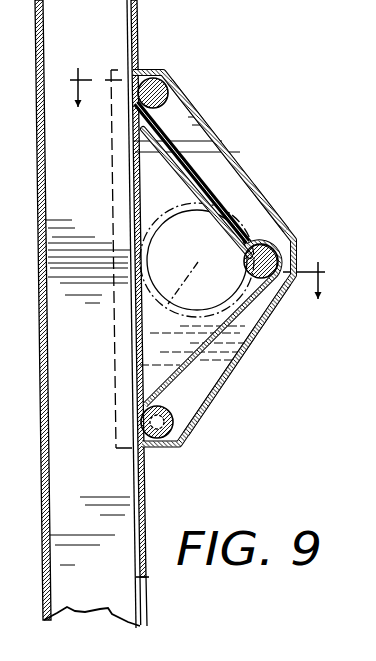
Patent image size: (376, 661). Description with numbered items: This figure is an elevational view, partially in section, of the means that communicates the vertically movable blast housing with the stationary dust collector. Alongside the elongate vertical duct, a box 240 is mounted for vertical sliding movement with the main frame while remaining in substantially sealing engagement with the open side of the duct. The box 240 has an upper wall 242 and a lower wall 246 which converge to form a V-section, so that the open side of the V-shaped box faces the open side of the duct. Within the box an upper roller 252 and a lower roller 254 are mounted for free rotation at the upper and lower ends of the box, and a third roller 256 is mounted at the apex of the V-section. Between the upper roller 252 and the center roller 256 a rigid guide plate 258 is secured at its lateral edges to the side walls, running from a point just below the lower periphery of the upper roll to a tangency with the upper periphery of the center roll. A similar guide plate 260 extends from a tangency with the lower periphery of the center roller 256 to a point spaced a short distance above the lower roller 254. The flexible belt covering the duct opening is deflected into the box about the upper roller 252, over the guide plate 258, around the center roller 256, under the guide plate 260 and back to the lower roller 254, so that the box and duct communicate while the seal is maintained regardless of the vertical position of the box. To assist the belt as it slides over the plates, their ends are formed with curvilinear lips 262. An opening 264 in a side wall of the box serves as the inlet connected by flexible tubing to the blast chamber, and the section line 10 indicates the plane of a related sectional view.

The section line 10- 10 is at (201, 245).
The box 240 is at (209, 117).
The upper wall 242 is at (232, 157).
The lower wall 246 is at (237, 363).
The upper roller 252 is at (170, 107).
The lower roller 254 is at (175, 422).
The third roller 256 is at (247, 250).
The guide plate 258 is at (195, 179).
The guide plate 260 is at (177, 362).
The curvilinear lips 262 is at (143, 132).
The opening 264 is at (197, 260).